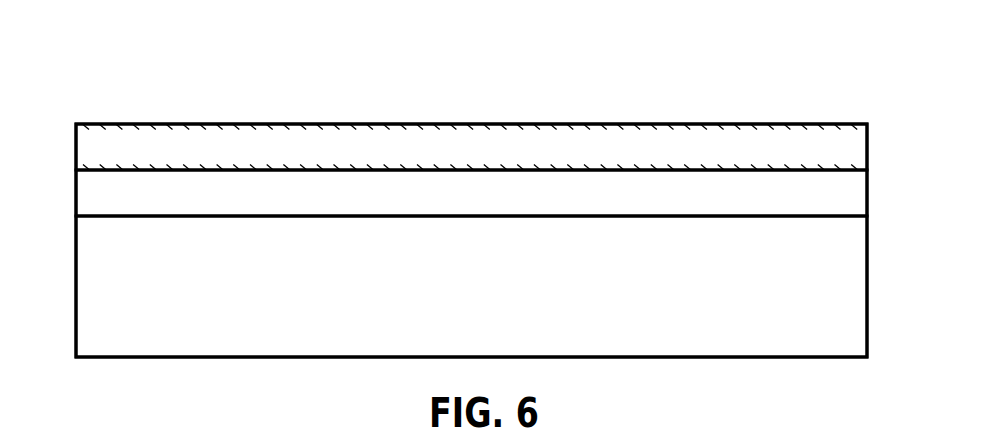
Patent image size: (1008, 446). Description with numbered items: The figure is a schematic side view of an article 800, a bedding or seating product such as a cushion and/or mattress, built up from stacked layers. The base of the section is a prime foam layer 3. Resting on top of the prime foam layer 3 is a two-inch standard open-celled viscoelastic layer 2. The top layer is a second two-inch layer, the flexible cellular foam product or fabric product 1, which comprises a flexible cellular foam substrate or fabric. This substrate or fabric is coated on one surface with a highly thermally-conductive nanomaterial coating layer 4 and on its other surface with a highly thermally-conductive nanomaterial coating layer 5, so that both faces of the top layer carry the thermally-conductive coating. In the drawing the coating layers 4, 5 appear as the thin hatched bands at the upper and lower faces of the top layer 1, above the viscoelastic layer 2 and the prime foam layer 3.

The article 800 is at (92, 48).
The flexible cellular foam product or fabric product 1 is at (868, 150).
The open-celled viscoelastic layer 2 is at (868, 200).
The prime foam layer 3 is at (868, 289).
The highly thermally-conductive nanomaterial coating layer 4 is at (76, 125).
The highly thermally-conductive nanomaterial coating layer 5 is at (76, 168).